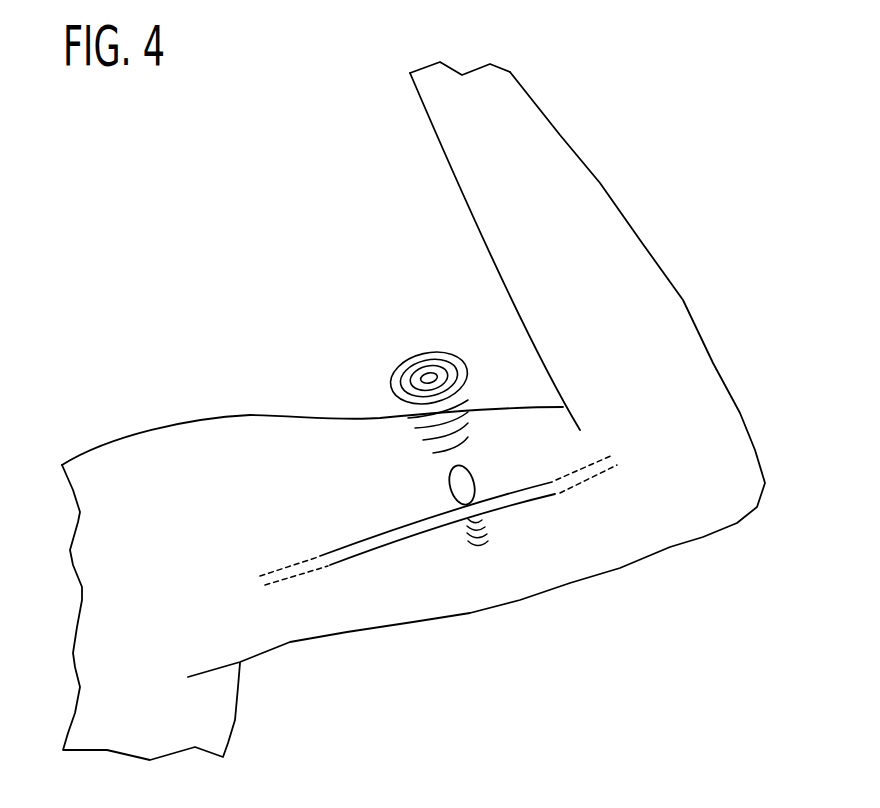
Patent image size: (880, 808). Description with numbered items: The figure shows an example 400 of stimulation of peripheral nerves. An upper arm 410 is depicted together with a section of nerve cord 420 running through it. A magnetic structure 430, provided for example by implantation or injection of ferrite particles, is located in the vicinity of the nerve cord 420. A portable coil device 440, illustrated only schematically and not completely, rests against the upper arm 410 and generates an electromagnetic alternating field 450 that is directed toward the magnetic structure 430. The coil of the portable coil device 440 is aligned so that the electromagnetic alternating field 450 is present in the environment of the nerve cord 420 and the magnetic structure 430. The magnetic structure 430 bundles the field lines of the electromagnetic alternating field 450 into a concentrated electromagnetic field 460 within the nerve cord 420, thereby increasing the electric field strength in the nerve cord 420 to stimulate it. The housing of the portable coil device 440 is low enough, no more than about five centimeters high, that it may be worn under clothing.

The example of a stimulation of peripheral nerves 400 is at (170, 245).
The upper arm 410 is at (305, 427).
The nerve cord 420 is at (357, 543).
The magnetic structure 430 is at (473, 478).
The portable coil device 440 is at (422, 353).
The electromagnetic alternating field 450 is at (418, 430).
The concentrated electromagnetic field 460 is at (485, 545).